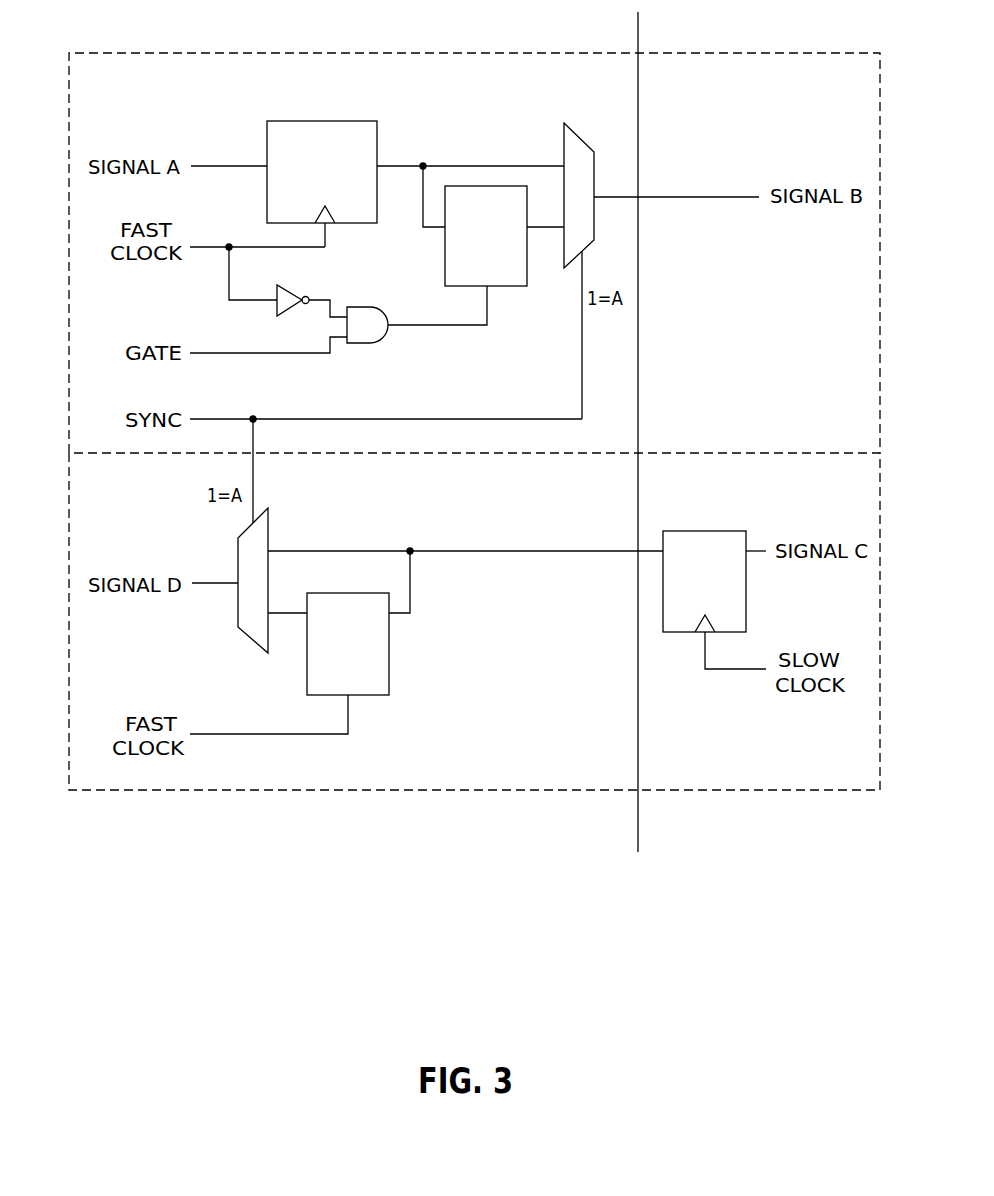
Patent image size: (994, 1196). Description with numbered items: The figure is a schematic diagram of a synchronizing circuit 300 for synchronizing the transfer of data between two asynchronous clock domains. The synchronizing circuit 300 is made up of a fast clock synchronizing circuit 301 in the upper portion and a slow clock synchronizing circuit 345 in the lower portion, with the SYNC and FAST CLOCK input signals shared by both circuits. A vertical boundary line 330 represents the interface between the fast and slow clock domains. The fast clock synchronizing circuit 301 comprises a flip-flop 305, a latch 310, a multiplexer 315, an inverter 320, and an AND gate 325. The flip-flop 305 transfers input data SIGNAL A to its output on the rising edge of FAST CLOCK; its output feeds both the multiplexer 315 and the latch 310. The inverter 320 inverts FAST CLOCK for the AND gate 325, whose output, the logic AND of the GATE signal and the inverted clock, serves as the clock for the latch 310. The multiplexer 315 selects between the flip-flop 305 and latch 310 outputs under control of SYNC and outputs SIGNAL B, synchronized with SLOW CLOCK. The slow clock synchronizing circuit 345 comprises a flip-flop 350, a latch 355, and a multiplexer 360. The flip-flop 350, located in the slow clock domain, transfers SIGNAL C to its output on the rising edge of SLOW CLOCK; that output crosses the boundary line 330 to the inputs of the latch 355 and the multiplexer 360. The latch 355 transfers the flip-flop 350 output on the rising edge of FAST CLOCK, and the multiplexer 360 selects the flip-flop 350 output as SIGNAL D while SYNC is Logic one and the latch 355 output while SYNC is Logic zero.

The synchronizing circuit 300 is at (197, 866).
The fast clock synchronizing circuit 301 is at (233, 52).
The flip-flop 305 is at (306, 118).
The latch 310 is at (510, 287).
The multiplexer 315 is at (573, 128).
The inverter 320 is at (290, 287).
The AND gate 325 is at (355, 343).
The boundary line 330 is at (640, 30).
The slow clock synchronizing circuit 345 is at (327, 790).
The flip-flop 350 is at (725, 530).
The latch 355 is at (375, 697).
The multiplexer 360 is at (258, 650).